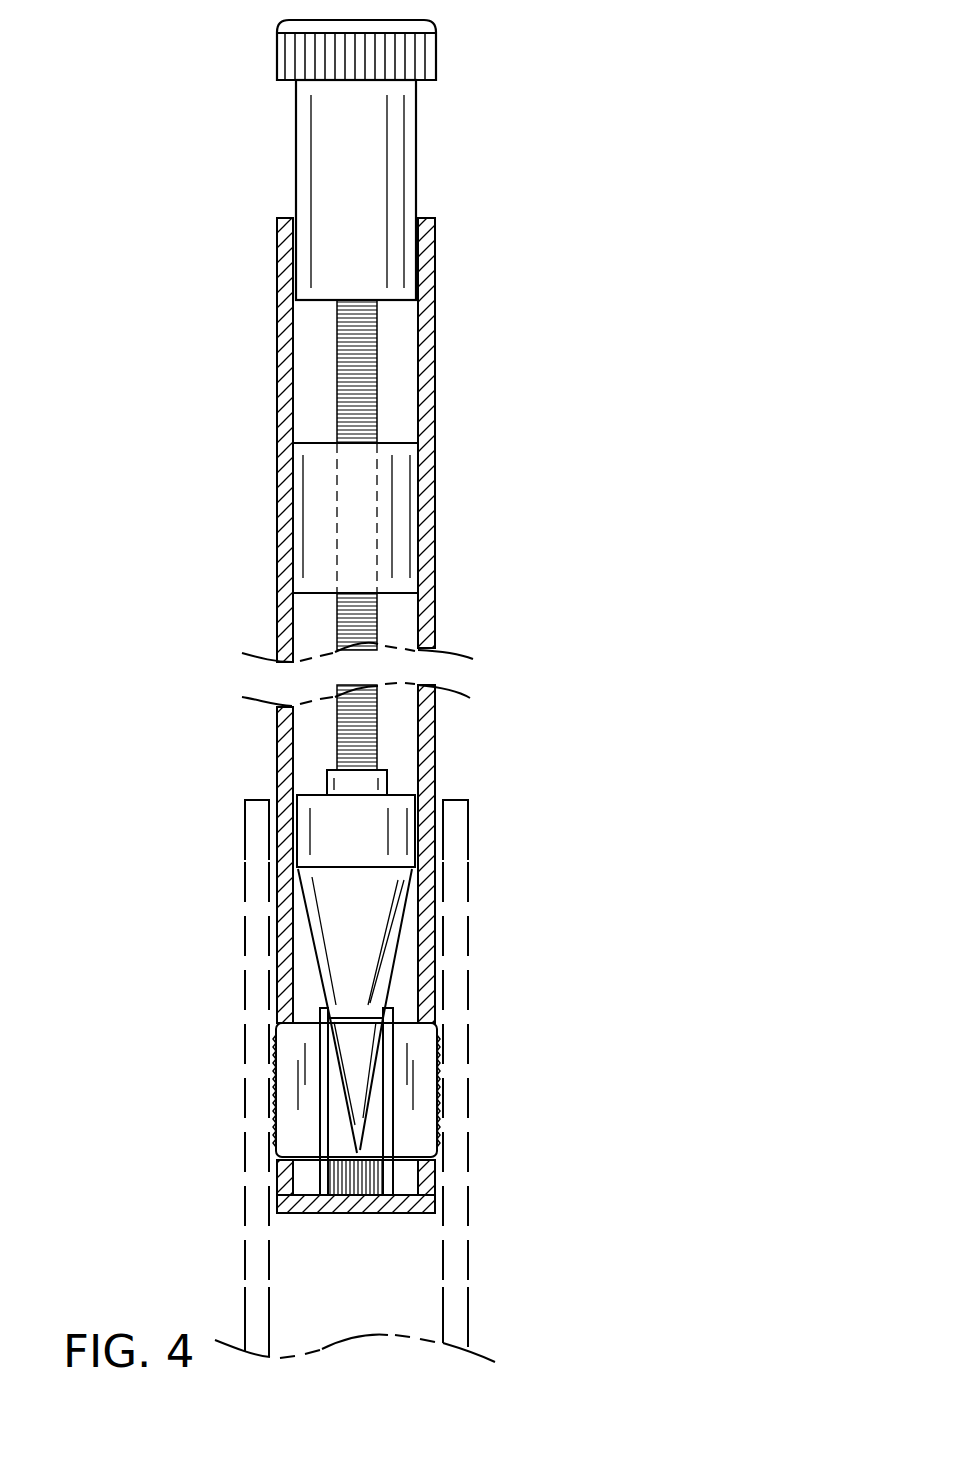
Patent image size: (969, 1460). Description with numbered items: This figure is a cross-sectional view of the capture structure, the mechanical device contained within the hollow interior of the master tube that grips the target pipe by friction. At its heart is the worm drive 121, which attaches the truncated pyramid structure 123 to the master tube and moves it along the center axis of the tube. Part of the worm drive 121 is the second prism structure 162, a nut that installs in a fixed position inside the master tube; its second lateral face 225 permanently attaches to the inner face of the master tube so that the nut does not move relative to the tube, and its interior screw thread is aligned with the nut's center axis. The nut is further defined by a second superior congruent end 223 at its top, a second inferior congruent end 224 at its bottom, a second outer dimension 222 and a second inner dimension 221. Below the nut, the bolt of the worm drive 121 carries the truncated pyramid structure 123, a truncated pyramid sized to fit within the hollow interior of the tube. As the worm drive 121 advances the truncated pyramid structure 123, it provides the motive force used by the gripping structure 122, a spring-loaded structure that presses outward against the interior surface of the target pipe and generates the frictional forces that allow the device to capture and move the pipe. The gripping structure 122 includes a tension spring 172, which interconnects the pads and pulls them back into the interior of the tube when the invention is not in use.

The second prism structure 162 is at (403, 468).
The second lateral face 225 is at (315, 458).
The second superior congruent end 223 is at (397, 443).
The second inferior congruent end 224 is at (397, 593).
The second outer dimension 222 is at (243, 483).
The second inner dimension 221 is at (258, 537).
The worm drive 121 is at (360, 710).
The truncated pyramid structure 123 is at (357, 917).
The gripping structure 122 is at (412, 1117).
The tension spring 172 is at (358, 1195).